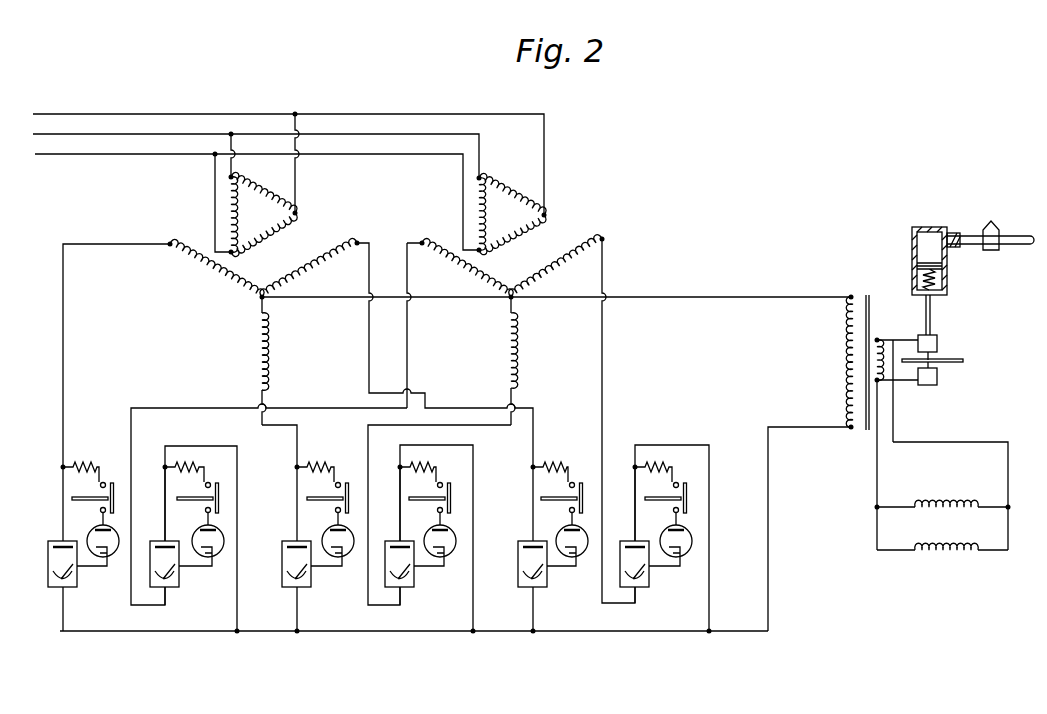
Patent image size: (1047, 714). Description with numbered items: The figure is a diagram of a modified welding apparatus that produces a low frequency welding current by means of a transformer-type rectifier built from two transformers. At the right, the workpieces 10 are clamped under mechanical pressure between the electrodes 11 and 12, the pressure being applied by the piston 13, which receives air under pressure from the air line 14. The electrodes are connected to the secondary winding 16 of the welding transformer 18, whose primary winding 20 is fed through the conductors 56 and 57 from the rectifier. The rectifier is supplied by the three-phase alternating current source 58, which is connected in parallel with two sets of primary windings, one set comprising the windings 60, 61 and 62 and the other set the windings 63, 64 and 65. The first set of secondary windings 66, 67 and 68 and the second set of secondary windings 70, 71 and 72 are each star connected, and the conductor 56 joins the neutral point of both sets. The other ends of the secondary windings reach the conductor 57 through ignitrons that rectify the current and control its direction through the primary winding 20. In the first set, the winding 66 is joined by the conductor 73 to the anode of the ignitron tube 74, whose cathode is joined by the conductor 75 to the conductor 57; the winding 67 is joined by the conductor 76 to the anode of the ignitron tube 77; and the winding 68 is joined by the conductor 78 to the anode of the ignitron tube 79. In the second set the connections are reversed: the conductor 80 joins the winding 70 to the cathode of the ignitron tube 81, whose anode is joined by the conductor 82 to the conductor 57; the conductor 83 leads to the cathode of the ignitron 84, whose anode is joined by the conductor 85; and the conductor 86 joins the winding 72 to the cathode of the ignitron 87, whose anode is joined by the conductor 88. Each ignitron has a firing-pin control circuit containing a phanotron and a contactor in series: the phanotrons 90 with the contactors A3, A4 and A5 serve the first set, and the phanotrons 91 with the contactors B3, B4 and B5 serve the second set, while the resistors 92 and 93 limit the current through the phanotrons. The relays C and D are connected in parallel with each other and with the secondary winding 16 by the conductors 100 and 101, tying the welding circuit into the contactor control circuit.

The source of current 58 is at (105, 106).
The primary winding 60 is at (227, 201).
The primary winding 61 is at (263, 232).
The primary winding 62 is at (262, 193).
The primary winding 63 is at (476, 211).
The primary winding 64 is at (525, 236).
The primary winding 65 is at (512, 196).
The secondary winding 66 is at (206, 273).
The secondary winding 67 is at (265, 341).
The secondary winding 68 is at (315, 259).
The secondary winding 70 is at (452, 273).
The secondary winding 71 is at (510, 344).
The secondary winding 72 is at (557, 273).
The conductor 73 is at (64, 350).
The ignitron tube 74 is at (48, 547).
The conductor 75 is at (63, 614).
The conductor 76 is at (297, 448).
The ignitron tube 77 is at (282, 553).
The conductor 78 is at (369, 356).
The ignitron tube 79 is at (518, 553).
The conductor 80 is at (195, 408).
The ignitron tube 81 is at (150, 547).
The conductor 82 is at (238, 594).
The conductor 83 is at (442, 425).
The ignitron 84 is at (385, 547).
The conductor 85 is at (474, 594).
The conductor 86 is at (603, 368).
The ignitron 87 is at (620, 545).
The conductor 88 is at (710, 553).
The phanotron 90 is at (117, 555).
The phanotron 91 is at (222, 555).
The resistor 92 is at (70, 465).
The resistor 93 is at (184, 462).
The contactor A3 is at (113, 483).
The contactor B3 is at (218, 483).
The contactor A4 is at (348, 483).
The contactor B4 is at (451, 491).
The contactor A5 is at (582, 483).
The contactor B5 is at (687, 491).
The conductor 56 is at (734, 297).
The conductor 57 is at (769, 589).
The welding transformer 18 is at (871, 284).
The primary winding 20 is at (849, 376).
The secondary winding 16 is at (881, 352).
The piston 13 is at (926, 262).
The air line 14 is at (1018, 236).
The electrode 12 is at (937, 340).
The workpieces 10 is at (945, 359).
The electrode 11 is at (938, 381).
The conductor 100 is at (1008, 465).
The conductor 101 is at (876, 468).
The relay C is at (946, 504).
The relay D is at (942, 553).